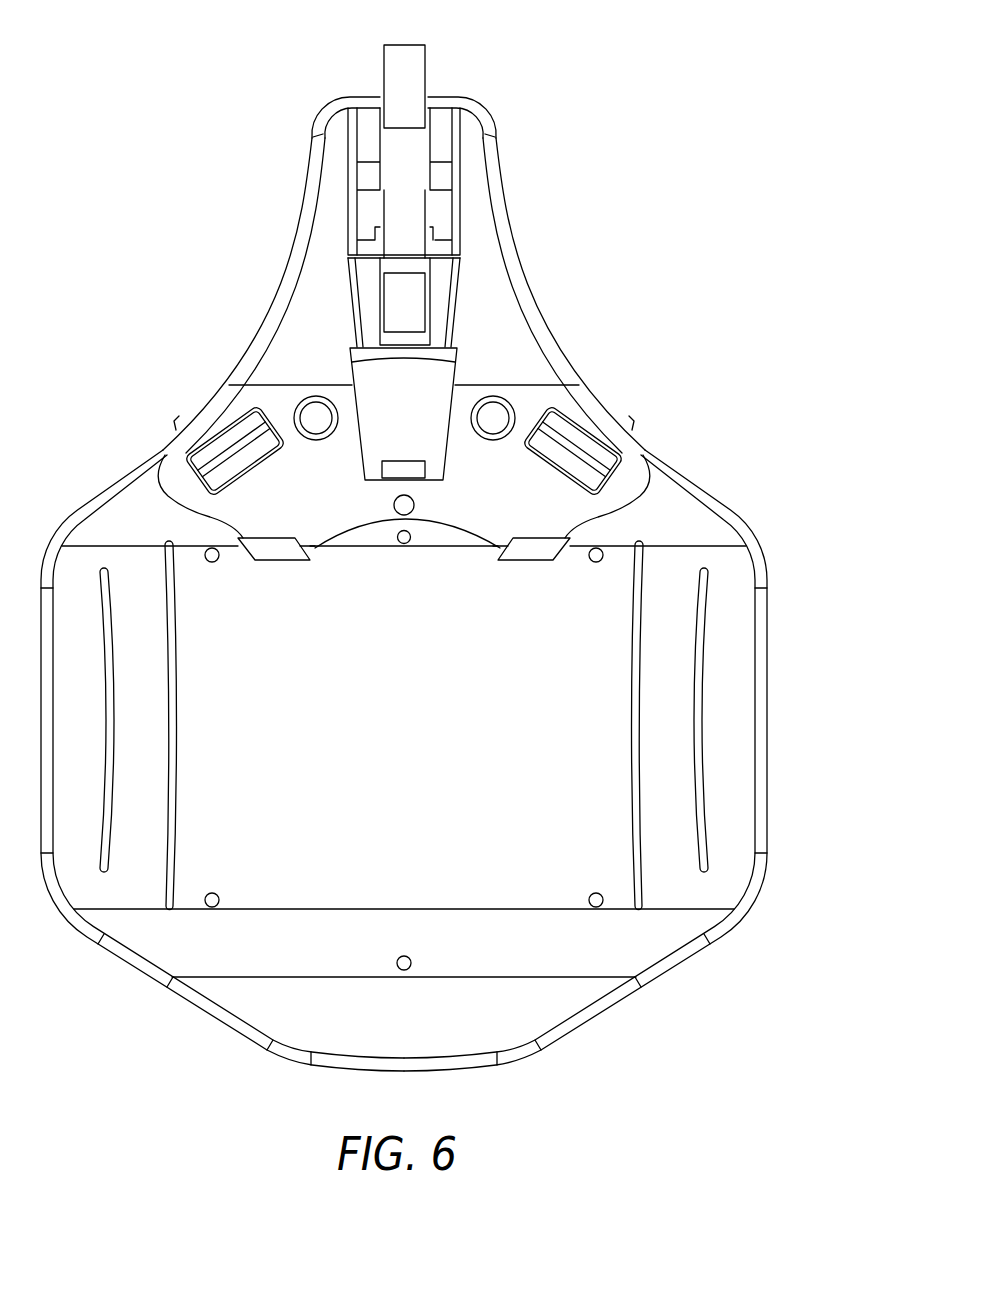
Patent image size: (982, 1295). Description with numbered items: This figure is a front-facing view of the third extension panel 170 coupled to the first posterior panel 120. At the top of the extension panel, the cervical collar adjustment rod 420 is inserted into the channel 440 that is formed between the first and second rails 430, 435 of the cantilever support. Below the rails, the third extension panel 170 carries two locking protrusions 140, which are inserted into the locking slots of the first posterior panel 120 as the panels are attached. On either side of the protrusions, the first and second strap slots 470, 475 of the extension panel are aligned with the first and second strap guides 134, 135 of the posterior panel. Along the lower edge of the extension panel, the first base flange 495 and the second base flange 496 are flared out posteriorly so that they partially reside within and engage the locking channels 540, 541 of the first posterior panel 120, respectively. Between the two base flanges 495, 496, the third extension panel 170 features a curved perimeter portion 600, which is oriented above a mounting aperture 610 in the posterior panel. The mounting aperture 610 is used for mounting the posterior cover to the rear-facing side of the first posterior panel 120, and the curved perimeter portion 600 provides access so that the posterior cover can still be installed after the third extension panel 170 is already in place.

The first posterior panel 120 is at (700, 533).
The first strap guide 134 is at (217, 483).
The second strap guide 135 is at (622, 447).
The locking protrusions 140 is at (316, 418).
The third extension panel 170 is at (545, 220).
The cervical collar adjustment rod 420 is at (413, 64).
The first rail 430 is at (365, 147).
The second rail 435 is at (447, 136).
The channel 440 is at (372, 86).
The first strap slot 470 is at (230, 430).
The second strap slot 475 is at (593, 440).
The first base flange 495 is at (312, 549).
The second base flange 496 is at (492, 552).
The locking channel 540 is at (310, 560).
The locking channel 541 is at (498, 560).
The curved perimeter portion 600 is at (447, 525).
The mounting aperture 610 is at (404, 540).